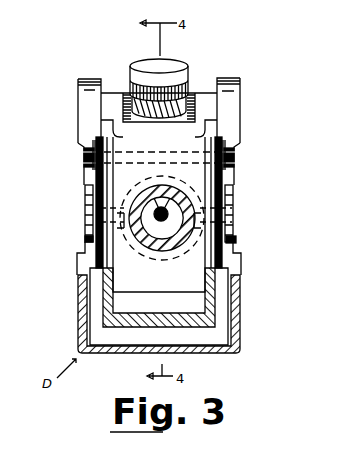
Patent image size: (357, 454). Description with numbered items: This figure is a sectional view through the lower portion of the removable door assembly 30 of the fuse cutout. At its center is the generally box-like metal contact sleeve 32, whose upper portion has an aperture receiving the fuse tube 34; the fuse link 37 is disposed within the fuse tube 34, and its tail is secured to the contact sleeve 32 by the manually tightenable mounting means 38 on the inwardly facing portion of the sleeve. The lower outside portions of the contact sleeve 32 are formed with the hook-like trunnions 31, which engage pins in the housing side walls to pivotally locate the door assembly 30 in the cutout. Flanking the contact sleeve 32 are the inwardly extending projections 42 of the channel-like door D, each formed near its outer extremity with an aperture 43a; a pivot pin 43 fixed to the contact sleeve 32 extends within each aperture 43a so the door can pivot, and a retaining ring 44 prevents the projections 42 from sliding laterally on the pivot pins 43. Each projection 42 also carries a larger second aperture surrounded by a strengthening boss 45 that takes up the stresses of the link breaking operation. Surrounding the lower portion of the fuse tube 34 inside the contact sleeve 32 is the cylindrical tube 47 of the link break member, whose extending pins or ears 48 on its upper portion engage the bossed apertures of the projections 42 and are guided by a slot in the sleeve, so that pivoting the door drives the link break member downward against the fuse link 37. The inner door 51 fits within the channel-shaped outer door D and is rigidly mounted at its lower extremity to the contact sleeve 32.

The door assembly 30 is at (229, 363).
The hook-like trunnions 31 is at (87, 80).
The contact sleeve 32 is at (151, 148).
The fuse tube 34 is at (143, 250).
The fuse link 37 is at (165, 222).
The manually tightenable mounting means 38 is at (158, 68).
The inwardly extending projections 42 is at (97, 178).
The pivot pins 43 is at (82, 153).
The aperture 43a is at (97, 135).
The retaining ring 44 is at (92, 147).
The strengthening boss 45 is at (87, 197).
The cylindrical tube 47 is at (237, 239).
The extending pins or ears 48 is at (90, 218).
The inner door 51 is at (148, 325).